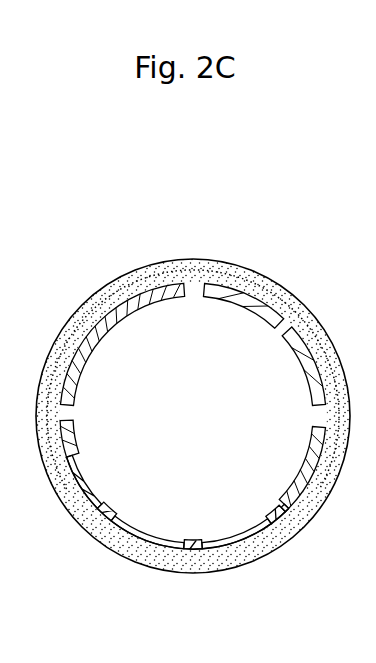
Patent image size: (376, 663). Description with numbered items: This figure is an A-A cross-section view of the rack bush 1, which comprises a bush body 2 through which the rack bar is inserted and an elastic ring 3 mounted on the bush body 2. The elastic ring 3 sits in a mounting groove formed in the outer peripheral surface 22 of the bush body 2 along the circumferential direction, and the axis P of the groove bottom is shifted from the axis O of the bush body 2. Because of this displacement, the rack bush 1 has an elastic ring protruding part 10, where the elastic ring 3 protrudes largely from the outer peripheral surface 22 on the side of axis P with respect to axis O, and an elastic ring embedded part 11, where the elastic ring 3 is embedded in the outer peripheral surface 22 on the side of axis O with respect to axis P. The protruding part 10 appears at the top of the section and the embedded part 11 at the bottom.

The rack bush 1 is at (177, 402).
The bush body 2 is at (63, 321).
The elastic ring 3 is at (312, 308).
The elastic ring protruding part 10 is at (129, 245).
The elastic ring embedded part 11 is at (121, 585).
The outer peripheral surface 22 is at (105, 280).